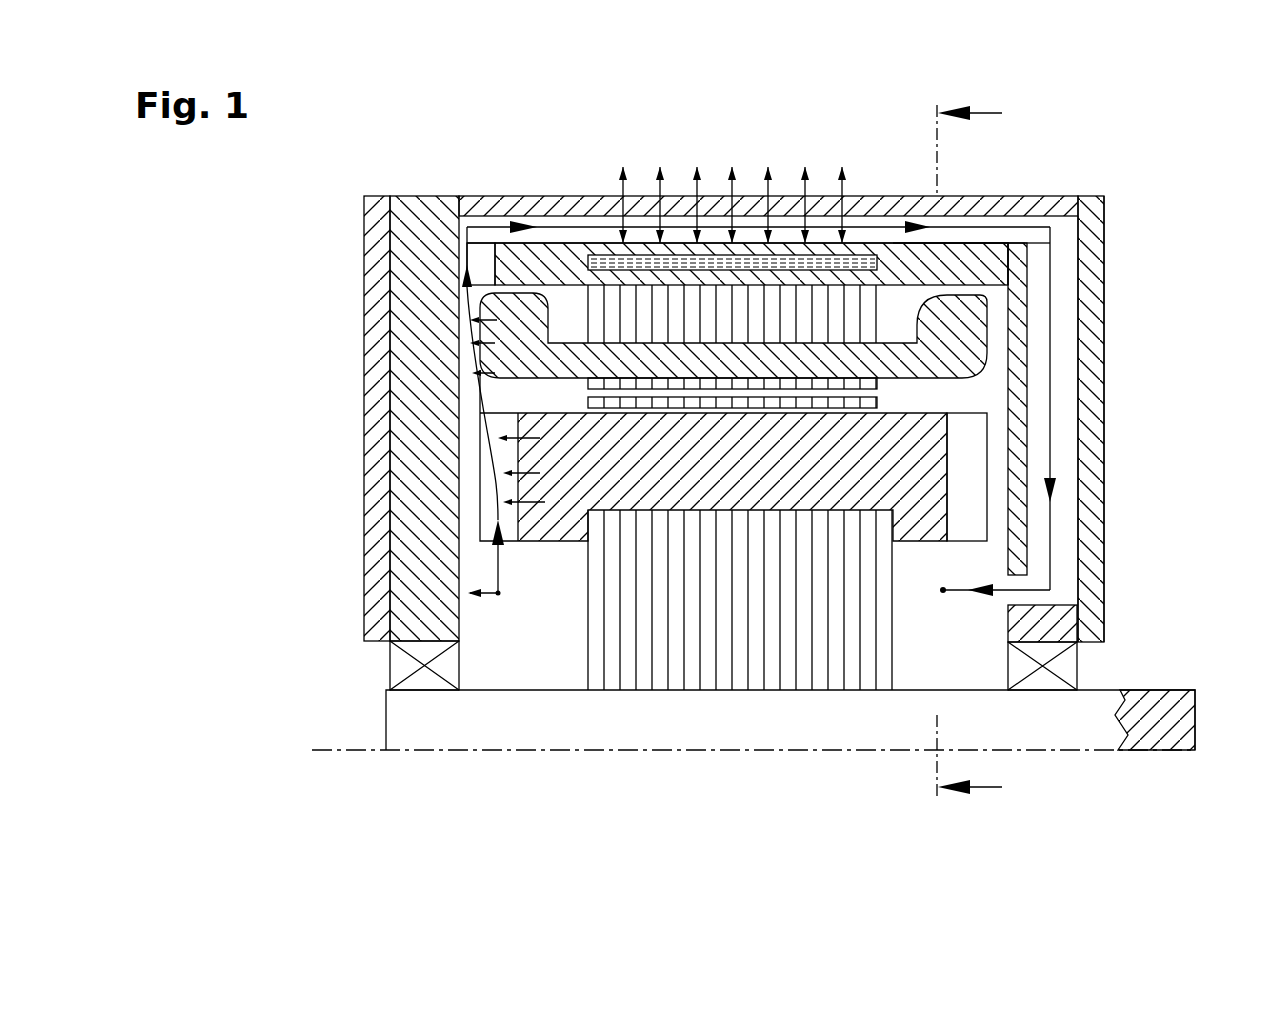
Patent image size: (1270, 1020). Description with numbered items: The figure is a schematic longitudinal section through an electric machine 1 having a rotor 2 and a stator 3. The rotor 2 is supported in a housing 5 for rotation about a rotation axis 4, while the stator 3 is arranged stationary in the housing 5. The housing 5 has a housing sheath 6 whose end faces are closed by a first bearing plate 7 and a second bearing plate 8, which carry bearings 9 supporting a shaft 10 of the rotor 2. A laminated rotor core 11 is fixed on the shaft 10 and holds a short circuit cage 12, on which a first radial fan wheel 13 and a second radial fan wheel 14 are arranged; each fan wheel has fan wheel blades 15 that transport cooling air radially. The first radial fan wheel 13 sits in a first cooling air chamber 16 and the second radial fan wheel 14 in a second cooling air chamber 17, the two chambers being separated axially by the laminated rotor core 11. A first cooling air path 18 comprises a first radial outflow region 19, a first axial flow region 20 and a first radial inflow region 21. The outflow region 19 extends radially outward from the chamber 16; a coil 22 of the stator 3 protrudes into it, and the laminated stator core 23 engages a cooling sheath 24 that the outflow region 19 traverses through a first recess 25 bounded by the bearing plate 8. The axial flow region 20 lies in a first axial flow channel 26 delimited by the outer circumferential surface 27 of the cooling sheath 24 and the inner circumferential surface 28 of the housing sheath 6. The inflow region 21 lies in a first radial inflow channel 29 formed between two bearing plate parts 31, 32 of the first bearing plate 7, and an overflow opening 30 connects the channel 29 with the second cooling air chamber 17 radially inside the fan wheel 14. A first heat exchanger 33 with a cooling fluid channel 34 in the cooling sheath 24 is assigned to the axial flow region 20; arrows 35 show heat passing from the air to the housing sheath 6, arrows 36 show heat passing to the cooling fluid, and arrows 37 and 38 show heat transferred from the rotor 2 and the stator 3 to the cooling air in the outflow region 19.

The electric machine 1 is at (1170, 149).
The rotor 2 is at (550, 633).
The stator 3 is at (549, 294).
The rotation axis 4 is at (342, 752).
The housing 5 is at (322, 213).
The housing sheath 6 is at (1057, 202).
The first bearing plate 7 is at (1098, 243).
The second bearing plate 8 is at (378, 321).
The bearings 9 is at (405, 665).
The shaft 10 is at (804, 720).
The laminated rotor core 11 is at (608, 662).
The short circuit cage 12 is at (927, 413).
The first radial fan wheel 13 is at (470, 482).
The second radial fan wheel 14 is at (982, 463).
The fan wheel blades 15 is at (967, 502).
The first cooling air chamber 16 is at (480, 571).
The second cooling air chamber 17 is at (980, 565).
The first cooling air path 18 is at (497, 207).
The first radial outflow region 19 is at (485, 380).
The first axial flow region 20 is at (578, 228).
The first radial inflow region 21 is at (1022, 312).
The coil 22 is at (488, 316).
The laminated stator core 23 is at (678, 295).
The cooling sheath 24 is at (893, 265).
The first recess 25 is at (480, 255).
The first axial flow channel 26 is at (822, 222).
The outer circumferential surface 27 is at (996, 237).
The inner circumferential surface 28 is at (642, 224).
The first radial inflow channel 29 is at (1057, 367).
The overflow opening 30 is at (1015, 598).
The bearing plate part 31 is at (1040, 622).
The bearing plate part 32 is at (1090, 537).
The first heat exchanger 33 is at (790, 245).
The cooling fluid channel 34 is at (865, 263).
The arrows 35 is at (748, 253).
The arrows 36 is at (792, 242).
The arrows 37 is at (497, 457).
The arrows 38 is at (472, 342).